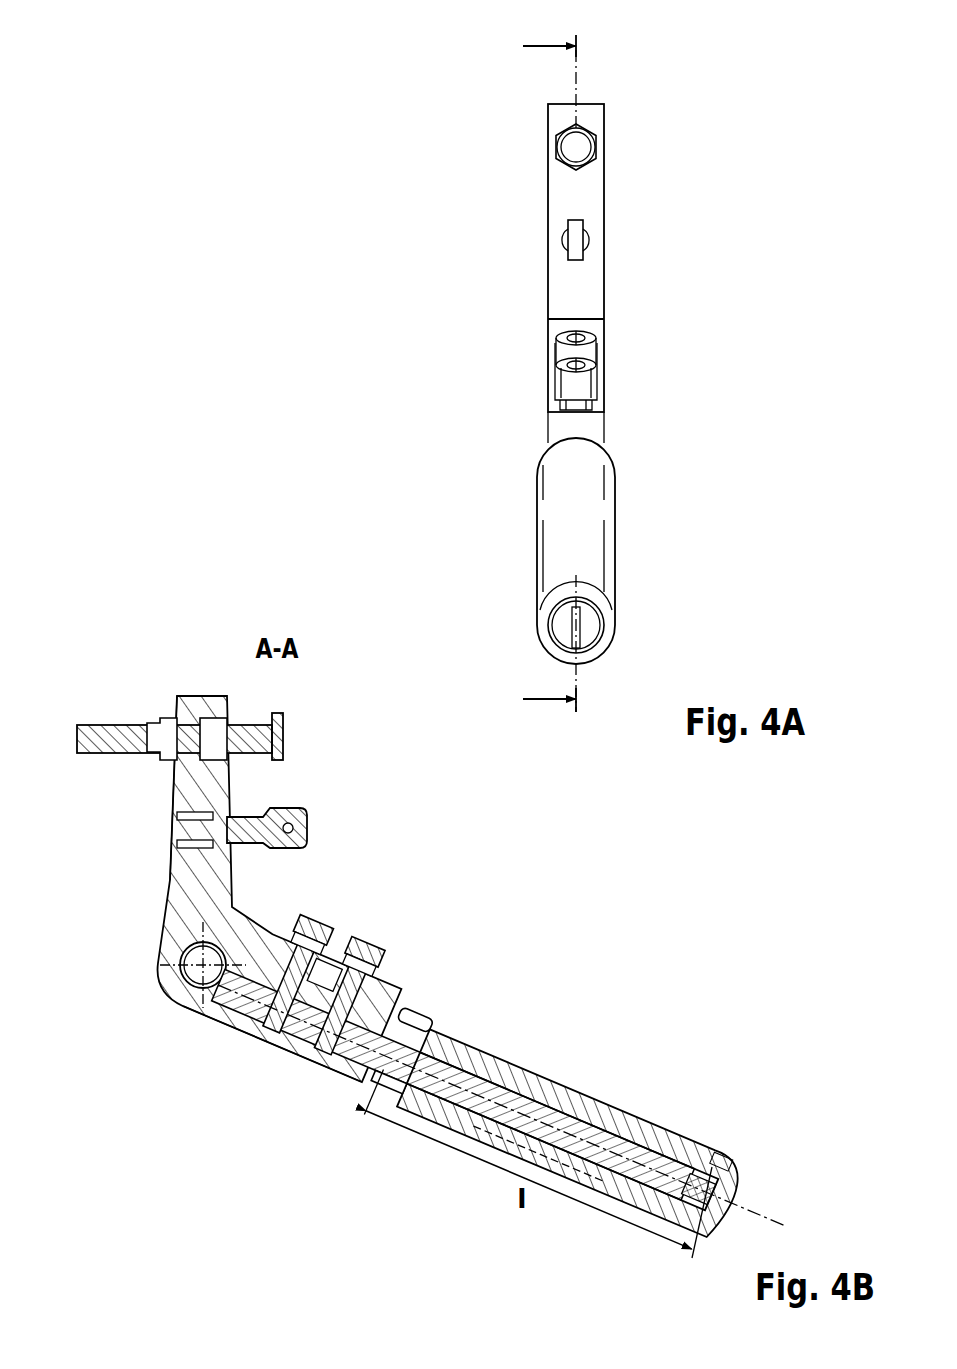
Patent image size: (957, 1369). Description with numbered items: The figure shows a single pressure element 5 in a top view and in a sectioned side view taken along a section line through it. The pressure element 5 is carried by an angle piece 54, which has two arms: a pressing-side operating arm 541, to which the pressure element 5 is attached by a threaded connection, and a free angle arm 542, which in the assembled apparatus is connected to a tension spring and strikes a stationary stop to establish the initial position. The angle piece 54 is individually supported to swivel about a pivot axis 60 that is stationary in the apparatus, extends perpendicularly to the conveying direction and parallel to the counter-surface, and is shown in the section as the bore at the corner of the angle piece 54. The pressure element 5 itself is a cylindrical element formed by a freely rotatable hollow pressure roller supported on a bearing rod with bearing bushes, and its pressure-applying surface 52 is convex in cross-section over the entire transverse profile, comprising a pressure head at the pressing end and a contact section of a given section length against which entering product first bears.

In FIG. 4A, the pressure element 5 is at (548, 289).
In FIG. 4A, the pressure-applying surface 52 is at (592, 655).
In FIG. 4B, the angle piece 54 is at (153, 952).
In FIG. 4B, the operating arm 541 is at (283, 1050).
In FIG. 4B, the free angle arm 542 is at (172, 870).
In FIG. 4B, the pivot axis 60 is at (180, 997).